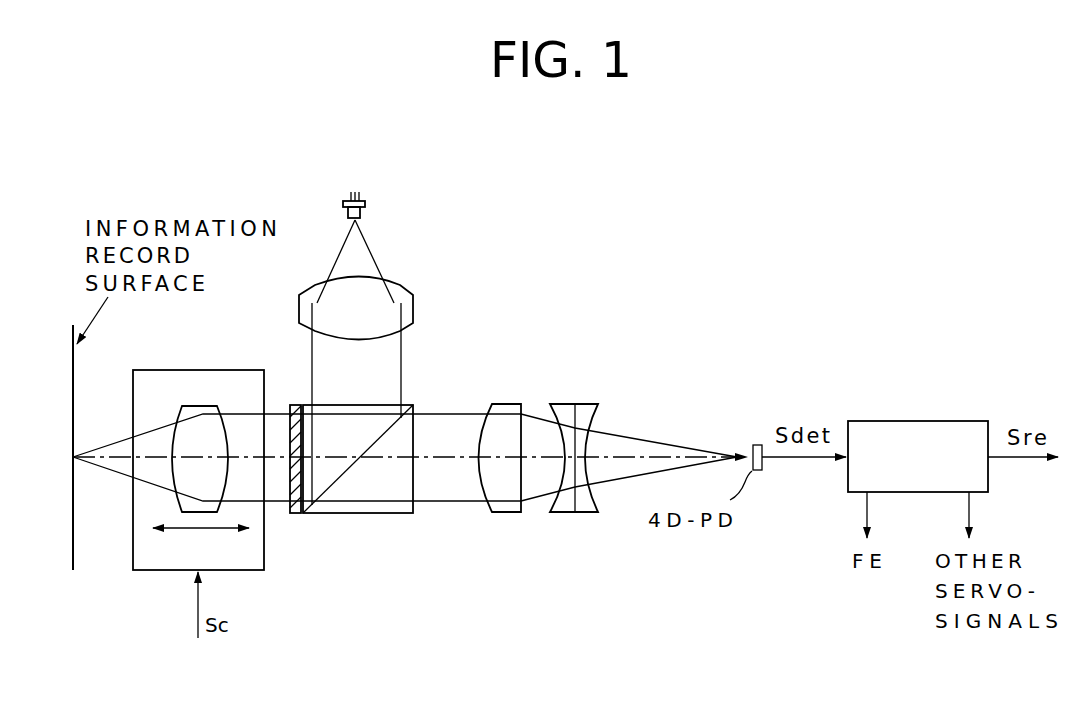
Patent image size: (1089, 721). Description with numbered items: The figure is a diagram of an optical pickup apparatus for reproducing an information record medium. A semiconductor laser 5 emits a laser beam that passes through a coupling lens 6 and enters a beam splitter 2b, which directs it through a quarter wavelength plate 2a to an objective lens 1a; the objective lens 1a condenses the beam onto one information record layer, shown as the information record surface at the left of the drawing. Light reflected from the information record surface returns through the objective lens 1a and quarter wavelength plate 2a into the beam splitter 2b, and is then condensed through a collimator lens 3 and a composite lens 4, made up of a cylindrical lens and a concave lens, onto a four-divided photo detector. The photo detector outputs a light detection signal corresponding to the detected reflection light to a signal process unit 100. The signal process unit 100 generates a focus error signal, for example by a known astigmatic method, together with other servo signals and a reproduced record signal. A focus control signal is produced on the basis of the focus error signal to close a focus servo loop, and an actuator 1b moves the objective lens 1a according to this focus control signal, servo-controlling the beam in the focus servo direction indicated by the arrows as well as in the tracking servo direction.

The objective lens 1a is at (184, 406).
The actuator 1b is at (221, 372).
The quarter wavelength plate 2a is at (290, 405).
The beam splitter 2b is at (377, 513).
The collimator lens 3 is at (500, 404).
The composite lens 4 is at (582, 404).
The semiconductor laser 5 is at (366, 211).
The coupling lens 6 is at (414, 317).
The signal process unit 100 is at (938, 421).